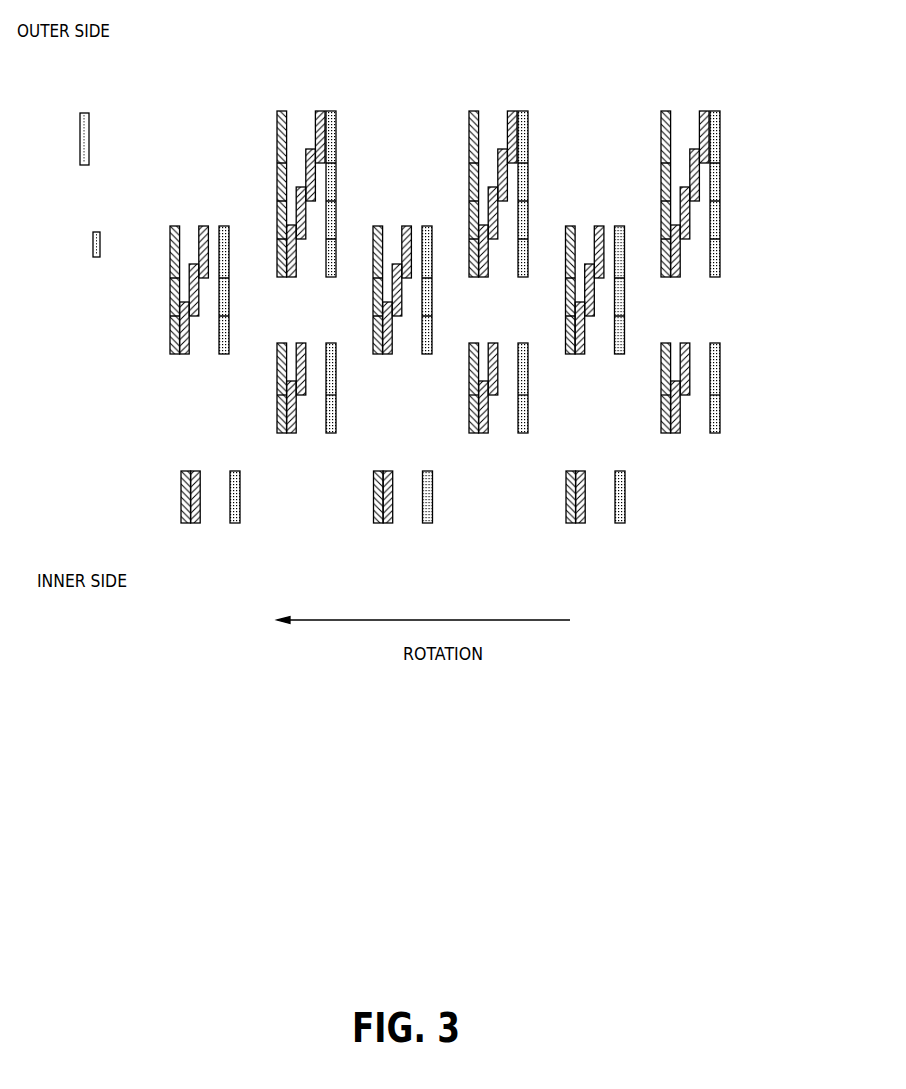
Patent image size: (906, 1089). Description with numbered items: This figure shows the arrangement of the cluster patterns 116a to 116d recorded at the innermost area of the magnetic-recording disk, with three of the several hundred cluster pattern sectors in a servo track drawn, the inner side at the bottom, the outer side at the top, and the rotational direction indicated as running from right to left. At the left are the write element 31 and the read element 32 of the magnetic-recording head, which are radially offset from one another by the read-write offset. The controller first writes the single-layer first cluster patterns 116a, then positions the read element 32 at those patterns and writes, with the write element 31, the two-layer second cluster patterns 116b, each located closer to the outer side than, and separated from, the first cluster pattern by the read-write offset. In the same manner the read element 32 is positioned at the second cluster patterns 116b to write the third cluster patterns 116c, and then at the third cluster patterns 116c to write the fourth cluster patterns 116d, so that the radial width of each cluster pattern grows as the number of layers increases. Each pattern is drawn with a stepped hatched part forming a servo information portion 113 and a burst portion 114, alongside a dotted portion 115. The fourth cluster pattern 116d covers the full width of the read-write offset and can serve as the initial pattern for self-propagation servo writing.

The write element 31 is at (89, 137).
The read element 32 is at (93, 243).
The servo information portion 113 is at (277, 113).
The burst portion 114 is at (288, 288).
The second conductor portion 115 is at (328, 112).
The first cluster patterns 116a is at (638, 472).
The second cluster patterns 116b is at (737, 343).
The third cluster patterns 116c is at (630, 232).
The fourth cluster patterns 116d is at (516, 185).